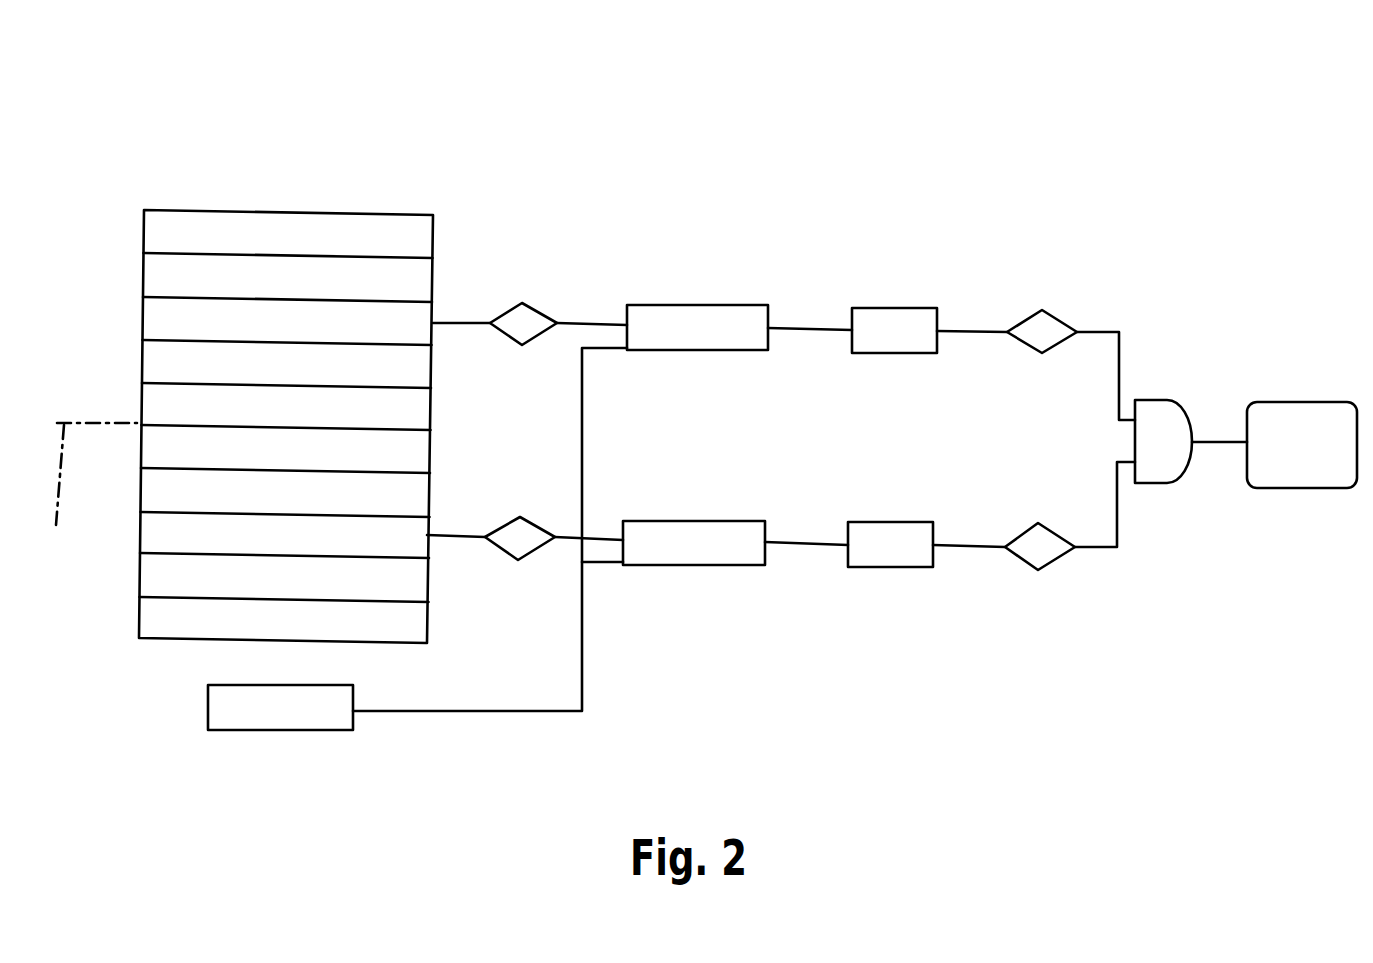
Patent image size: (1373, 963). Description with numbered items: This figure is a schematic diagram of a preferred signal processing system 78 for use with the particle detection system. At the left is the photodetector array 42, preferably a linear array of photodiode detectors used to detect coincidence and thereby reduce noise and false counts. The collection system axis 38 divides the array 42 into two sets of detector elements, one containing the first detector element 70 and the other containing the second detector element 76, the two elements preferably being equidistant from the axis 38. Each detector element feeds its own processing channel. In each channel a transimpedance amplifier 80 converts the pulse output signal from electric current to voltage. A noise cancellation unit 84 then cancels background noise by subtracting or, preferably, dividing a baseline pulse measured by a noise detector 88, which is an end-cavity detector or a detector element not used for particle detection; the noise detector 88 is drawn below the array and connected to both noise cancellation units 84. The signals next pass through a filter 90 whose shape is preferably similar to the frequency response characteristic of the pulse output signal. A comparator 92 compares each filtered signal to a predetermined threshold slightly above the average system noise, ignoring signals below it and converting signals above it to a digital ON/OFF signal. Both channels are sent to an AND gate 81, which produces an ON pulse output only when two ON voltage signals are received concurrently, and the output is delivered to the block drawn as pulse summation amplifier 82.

The collection system axis 38 is at (96, 509).
The photodetector array 42 is at (270, 210).
The first detector element 70 is at (285, 535).
The second detector element 76 is at (287, 322).
The signal processing system 78 is at (930, 668).
The transimpedance amplifier 80 is at (497, 538).
The AND gate 81 is at (1150, 483).
The pulse summation amplifier 82 is at (1277, 488).
The noise cancellation unit 84 is at (667, 519).
The noise detector 88 is at (280, 730).
The filter 90 is at (892, 522).
The comparator 92 is at (1047, 523).